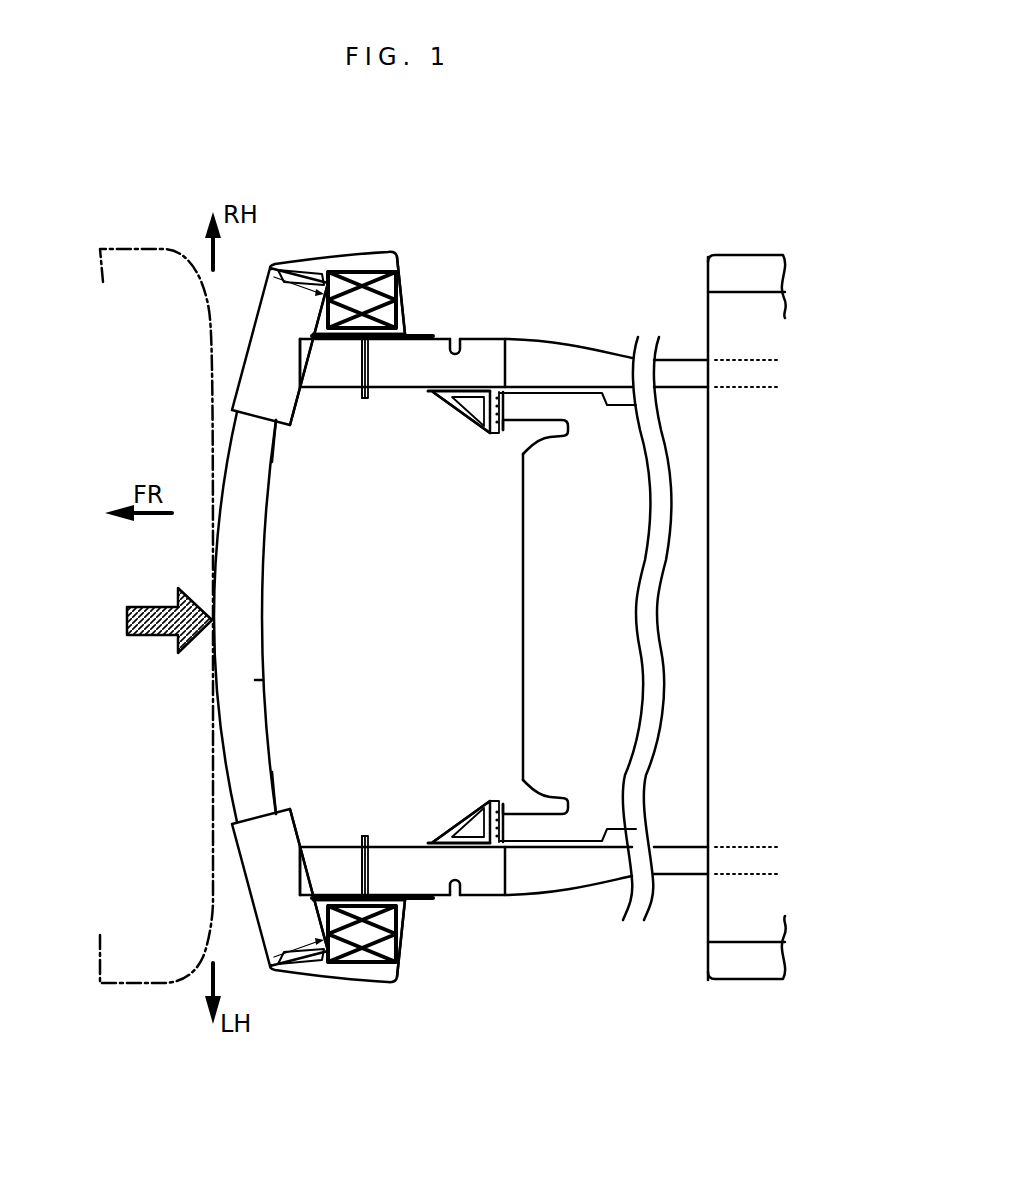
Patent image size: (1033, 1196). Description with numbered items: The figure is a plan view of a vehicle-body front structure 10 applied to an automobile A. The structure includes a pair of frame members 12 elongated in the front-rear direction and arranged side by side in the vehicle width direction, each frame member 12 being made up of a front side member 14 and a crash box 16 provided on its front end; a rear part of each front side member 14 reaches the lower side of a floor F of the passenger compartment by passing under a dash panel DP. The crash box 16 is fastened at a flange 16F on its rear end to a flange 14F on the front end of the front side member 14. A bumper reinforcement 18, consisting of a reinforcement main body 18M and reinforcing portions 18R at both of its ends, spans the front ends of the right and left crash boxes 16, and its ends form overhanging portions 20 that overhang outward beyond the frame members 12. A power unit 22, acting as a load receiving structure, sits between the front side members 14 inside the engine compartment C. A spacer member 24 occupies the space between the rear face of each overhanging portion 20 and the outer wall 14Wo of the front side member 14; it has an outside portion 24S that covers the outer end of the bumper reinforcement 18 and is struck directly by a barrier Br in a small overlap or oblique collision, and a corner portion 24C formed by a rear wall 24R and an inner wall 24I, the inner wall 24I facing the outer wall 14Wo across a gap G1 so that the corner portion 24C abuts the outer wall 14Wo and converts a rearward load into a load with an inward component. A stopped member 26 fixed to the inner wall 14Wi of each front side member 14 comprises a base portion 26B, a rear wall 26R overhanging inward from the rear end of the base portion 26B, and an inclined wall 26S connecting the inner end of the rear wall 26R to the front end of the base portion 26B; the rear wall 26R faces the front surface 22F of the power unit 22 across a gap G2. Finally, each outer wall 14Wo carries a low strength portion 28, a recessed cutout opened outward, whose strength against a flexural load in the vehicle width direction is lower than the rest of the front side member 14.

The vehicle-body front structure 10 is at (520, 258).
The frame member 12 is at (422, 497).
The front side member 14 is at (400, 397).
The flange 14F is at (370, 395).
The inner wall 14Wi is at (417, 393).
The outer wall 14Wo is at (415, 336).
The crash box 16 is at (343, 397).
The flange 16F is at (361, 357).
The bumper reinforcement 18 is at (272, 622).
The reinforcement main body 18M is at (263, 680).
The reinforcing portion 18R is at (287, 412).
The overhanging portion 20 is at (248, 318).
The power unit 22 is at (530, 605).
The front surface 22F is at (503, 403).
The spacer member 24 is at (401, 246).
The corner portion 24C is at (408, 330).
The inner wall 24I is at (312, 355).
The rear wall 24R is at (404, 294).
The outside portion 24S is at (300, 268).
The stopped member 26 is at (495, 444).
The base portion 26B is at (457, 383).
The rear wall 26R is at (524, 453).
The inclined wall 26S is at (467, 433).
The low strength portion 28 is at (470, 337).
The automobile A is at (612, 245).
The barrier Br is at (137, 268).
The engine compartment C is at (418, 624).
The dash panel DP is at (708, 683).
The floor F is at (742, 970).
The gap G1 is at (417, 374).
The gap G2 is at (557, 374).